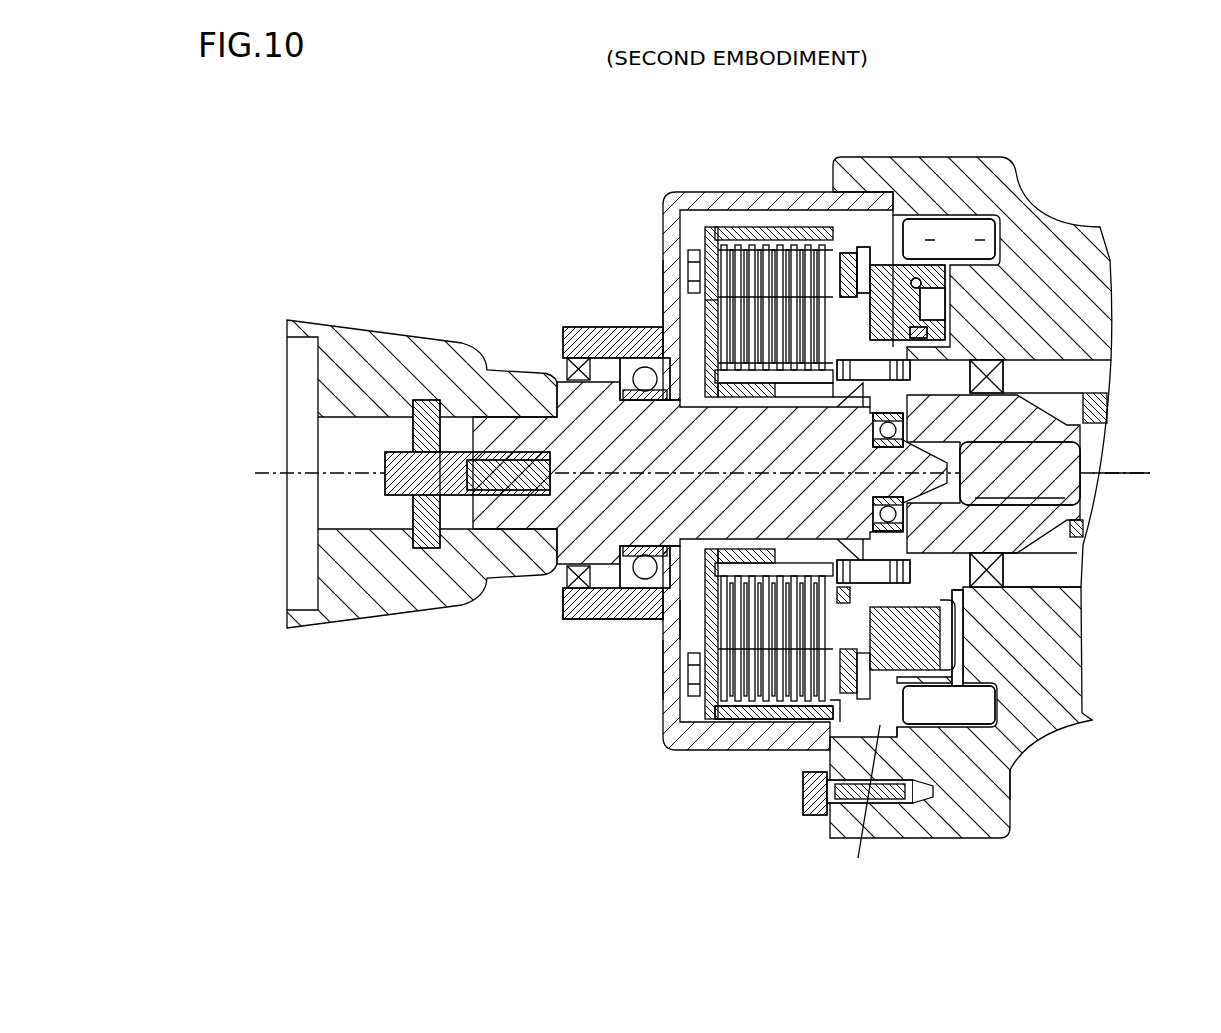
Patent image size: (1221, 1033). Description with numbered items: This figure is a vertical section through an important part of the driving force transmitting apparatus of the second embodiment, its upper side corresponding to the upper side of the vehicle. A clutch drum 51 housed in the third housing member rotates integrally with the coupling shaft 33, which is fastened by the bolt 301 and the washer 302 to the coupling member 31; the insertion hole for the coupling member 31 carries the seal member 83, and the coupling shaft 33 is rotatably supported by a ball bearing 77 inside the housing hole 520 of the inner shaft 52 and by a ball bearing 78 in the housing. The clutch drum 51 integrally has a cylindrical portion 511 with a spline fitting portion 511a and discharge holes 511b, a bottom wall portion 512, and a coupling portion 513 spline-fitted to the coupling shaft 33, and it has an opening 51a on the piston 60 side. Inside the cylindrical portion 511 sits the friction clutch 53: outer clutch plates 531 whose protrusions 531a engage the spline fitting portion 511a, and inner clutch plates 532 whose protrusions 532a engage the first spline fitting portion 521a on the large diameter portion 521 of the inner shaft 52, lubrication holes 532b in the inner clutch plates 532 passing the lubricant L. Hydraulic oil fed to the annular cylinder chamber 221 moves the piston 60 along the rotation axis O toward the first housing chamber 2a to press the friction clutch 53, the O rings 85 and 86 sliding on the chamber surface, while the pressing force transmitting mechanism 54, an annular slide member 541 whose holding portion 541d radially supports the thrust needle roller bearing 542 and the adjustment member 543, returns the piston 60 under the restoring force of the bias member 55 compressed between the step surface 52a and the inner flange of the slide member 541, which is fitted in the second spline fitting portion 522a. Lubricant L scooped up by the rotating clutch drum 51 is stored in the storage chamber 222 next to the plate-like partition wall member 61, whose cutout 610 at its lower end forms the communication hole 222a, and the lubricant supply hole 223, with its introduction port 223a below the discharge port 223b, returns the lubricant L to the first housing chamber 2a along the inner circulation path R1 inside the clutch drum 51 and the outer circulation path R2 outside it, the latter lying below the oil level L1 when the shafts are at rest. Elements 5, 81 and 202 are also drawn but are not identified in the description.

The first housing chamber 2a is at (661, 652).
The clutch 5 is at (707, 243).
The coupling member 31 is at (383, 320).
The coupling shaft 33 is at (570, 420).
The clutch drum 51 is at (698, 220).
The opening 51a is at (857, 708).
The inner shaft 52 is at (1018, 402).
The step surface 52a is at (872, 574).
The friction clutch 53 is at (784, 732).
The pressing force transmitting mechanism 54 is at (860, 110).
The bias member 55 is at (860, 560).
The piston 60 is at (987, 185).
The partition wall member 61 is at (920, 258).
The ball bearing 77 is at (873, 506).
The ball bearing 78 is at (690, 262).
The seal 81 is at (1004, 570).
The seal member 83 is at (561, 588).
The O ring 85 is at (928, 333).
The O ring 86 is at (925, 283).
The bolt 202 is at (816, 817).
The cylinder chamber 221 is at (945, 302).
The storage chamber 222 is at (995, 222).
The communication hole 222a is at (922, 718).
The lubricant supply hole 223 is at (963, 643).
The introduction port 223a is at (969, 683).
The discharge port 223b is at (970, 594).
The bolt 301 is at (388, 456).
The washer 302 is at (413, 408).
The cylindrical portion 511 is at (822, 240).
The spline fitting portion 511a is at (763, 243).
The discharge holes 511b is at (803, 243).
The bottom wall portion 512 is at (678, 245).
The coupling portion 513 is at (745, 390).
The housing hole 520 is at (723, 323).
The large diameter portion 521 is at (716, 388).
The first spline fitting portion 521a is at (871, 372).
The second spline fitting portion 522a is at (908, 430).
The outer clutch plates 531 is at (723, 720).
The protrusions 531a is at (757, 720).
The inner clutch plates 532 is at (723, 240).
The protrusions 532a is at (791, 388).
The lubrication holes 532b is at (703, 290).
The slide member 541 is at (848, 270).
The holding portion 541d is at (846, 623).
The thrust needle roller bearing 542 is at (875, 260).
The adjustment member 543 is at (862, 262).
The cutout 610 is at (897, 722).
The rotation axis O is at (274, 472).
The lubricant L is at (1013, 773).
The oil level L1 is at (672, 622).
The inner circulation path R1 is at (1097, 477).
The outer circulation path R2 is at (862, 803).